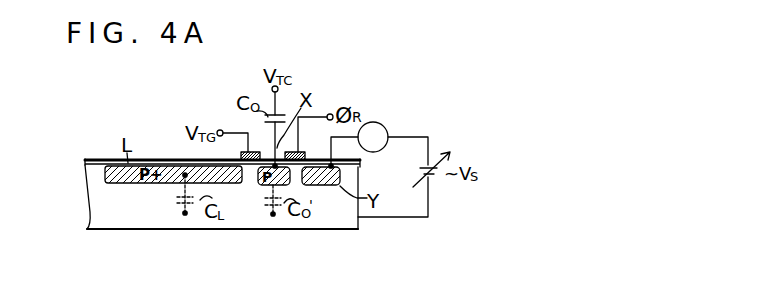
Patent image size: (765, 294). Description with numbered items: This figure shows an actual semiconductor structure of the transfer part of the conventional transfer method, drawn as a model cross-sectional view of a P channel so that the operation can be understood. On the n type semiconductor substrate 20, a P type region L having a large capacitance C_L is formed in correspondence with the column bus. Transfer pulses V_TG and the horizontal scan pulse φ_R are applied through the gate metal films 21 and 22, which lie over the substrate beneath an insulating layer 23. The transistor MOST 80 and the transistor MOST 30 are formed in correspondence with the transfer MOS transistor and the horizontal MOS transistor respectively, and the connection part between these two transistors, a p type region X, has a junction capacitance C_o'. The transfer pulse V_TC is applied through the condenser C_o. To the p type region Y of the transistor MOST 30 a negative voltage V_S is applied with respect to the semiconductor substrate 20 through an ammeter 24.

The n type semiconductor substrate 20 is at (168, 230).
The gate metal film 21 is at (259, 146).
The gate metal film 22 is at (309, 154).
The insulating layer 23 is at (95, 158).
The ammeter 24 is at (386, 121).
The MOST30 30 is at (307, 188).
The MOST80 80 is at (250, 188).